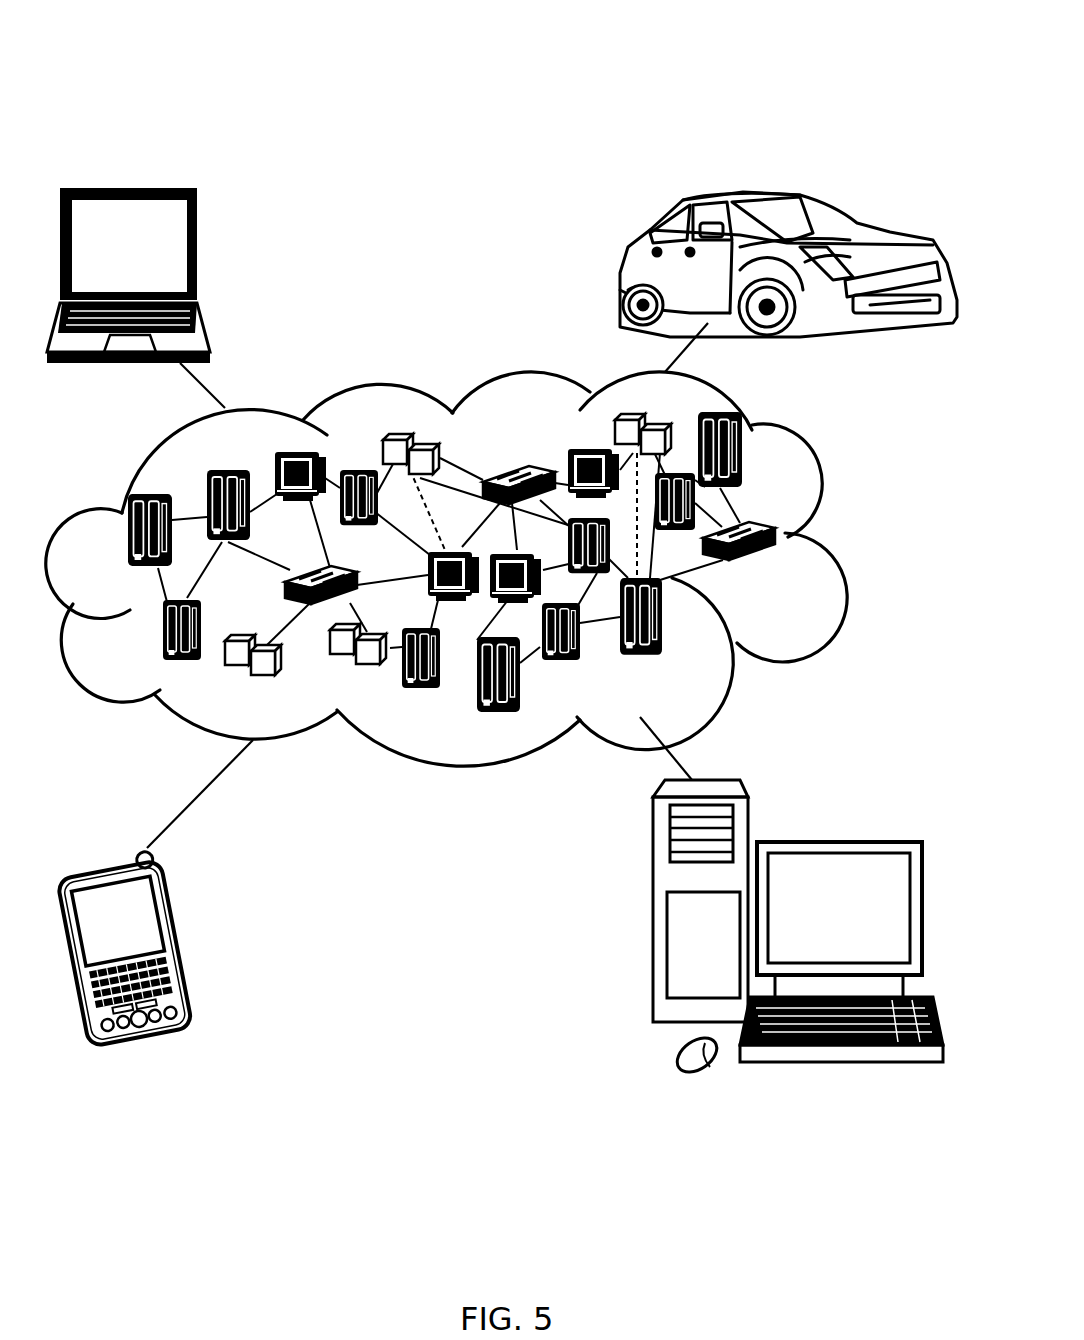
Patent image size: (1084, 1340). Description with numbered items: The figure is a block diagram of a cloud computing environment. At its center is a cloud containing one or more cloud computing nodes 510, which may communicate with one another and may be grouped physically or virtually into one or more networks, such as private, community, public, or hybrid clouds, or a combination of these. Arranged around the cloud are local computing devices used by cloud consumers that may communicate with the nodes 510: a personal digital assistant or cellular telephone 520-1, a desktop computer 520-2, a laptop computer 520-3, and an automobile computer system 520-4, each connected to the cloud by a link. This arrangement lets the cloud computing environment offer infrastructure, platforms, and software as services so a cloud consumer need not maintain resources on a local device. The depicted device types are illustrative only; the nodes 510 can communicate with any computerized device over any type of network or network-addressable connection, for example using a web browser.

The cloud computing nodes 510 is at (797, 573).
The personal digital assistant (PDA) or cellular telephone 520-1 is at (188, 942).
The desktop computer 520-2 is at (848, 816).
The laptop computer 520-3 is at (198, 258).
The automobile computer system 520-4 is at (615, 268).